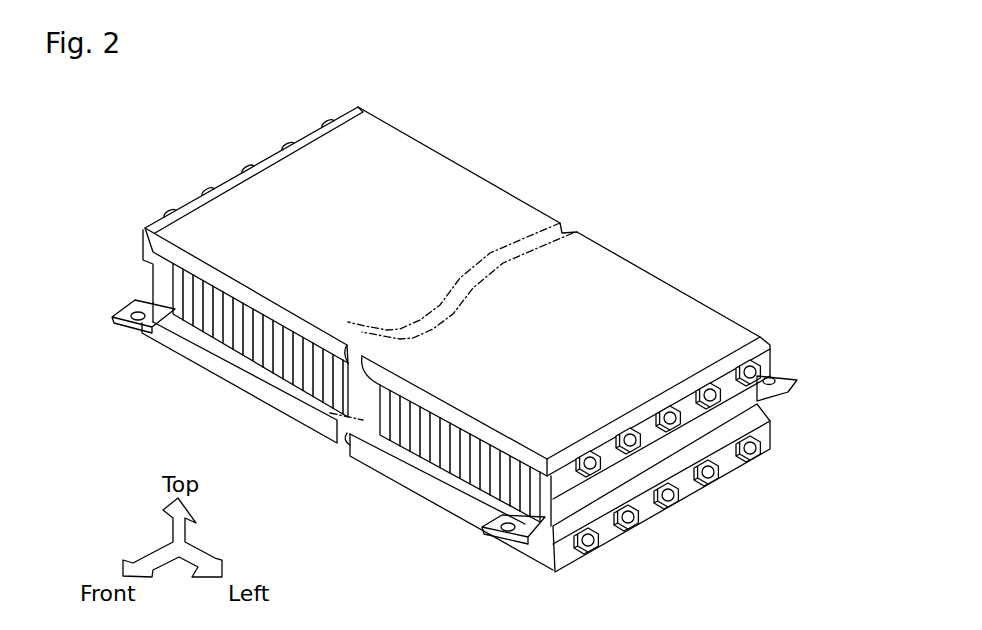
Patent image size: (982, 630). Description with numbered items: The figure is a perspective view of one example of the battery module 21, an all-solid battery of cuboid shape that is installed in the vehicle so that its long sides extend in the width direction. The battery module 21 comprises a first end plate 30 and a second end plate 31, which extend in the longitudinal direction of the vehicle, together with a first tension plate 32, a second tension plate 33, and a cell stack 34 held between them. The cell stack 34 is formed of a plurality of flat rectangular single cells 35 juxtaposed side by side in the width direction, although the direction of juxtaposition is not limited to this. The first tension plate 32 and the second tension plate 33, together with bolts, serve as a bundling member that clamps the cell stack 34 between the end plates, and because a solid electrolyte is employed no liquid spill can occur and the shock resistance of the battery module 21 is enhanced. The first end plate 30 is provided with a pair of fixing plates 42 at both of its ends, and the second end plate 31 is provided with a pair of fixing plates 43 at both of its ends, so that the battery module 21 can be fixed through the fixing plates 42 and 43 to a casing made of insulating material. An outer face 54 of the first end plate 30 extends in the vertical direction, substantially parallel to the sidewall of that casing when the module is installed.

The battery module 21 is at (475, 127).
The first end plate 30 is at (662, 515).
The second end plate 31 is at (229, 168).
The first tension plate 32 is at (662, 283).
The second tension plate 33 is at (395, 478).
The cell stack 34 is at (211, 340).
The single cell 35 is at (348, 388).
The fixing plate 42 is at (777, 391).
The fixing plate 43 is at (116, 321).
The outer face 54 is at (775, 356).